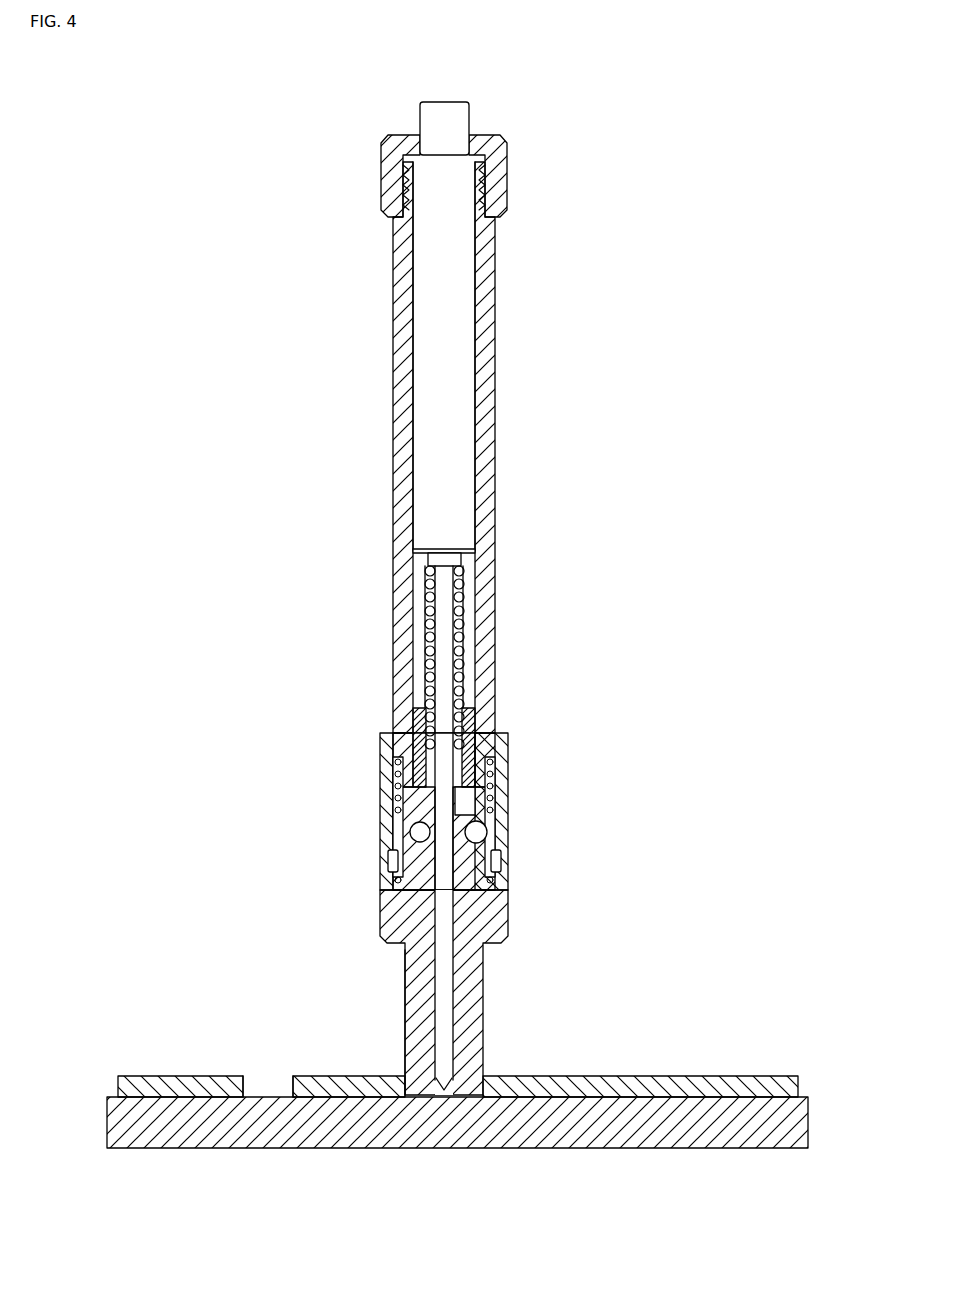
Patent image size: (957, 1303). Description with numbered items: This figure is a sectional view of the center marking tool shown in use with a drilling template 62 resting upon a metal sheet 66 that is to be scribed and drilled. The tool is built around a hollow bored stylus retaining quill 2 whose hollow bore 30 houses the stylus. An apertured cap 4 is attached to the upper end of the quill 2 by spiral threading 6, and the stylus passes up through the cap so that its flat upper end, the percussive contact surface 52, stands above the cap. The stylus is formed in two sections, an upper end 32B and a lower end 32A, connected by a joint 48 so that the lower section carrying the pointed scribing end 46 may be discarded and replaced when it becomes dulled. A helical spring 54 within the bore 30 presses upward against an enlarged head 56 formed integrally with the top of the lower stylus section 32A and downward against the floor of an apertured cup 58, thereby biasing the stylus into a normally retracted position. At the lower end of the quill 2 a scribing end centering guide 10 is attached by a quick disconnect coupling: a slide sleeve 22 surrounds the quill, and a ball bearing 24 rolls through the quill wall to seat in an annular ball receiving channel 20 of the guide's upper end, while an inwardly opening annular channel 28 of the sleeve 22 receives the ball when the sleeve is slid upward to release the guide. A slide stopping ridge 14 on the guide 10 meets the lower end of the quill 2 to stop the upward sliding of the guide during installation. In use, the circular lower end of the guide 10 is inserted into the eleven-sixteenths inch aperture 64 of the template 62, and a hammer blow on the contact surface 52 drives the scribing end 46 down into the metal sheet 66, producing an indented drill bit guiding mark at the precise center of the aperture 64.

The stylus retaining quill 2 is at (488, 295).
The apertured cap 4 is at (500, 166).
The spiral threading 6 is at (396, 181).
The scribing end centering guide 10 is at (384, 986).
The slide stopping ridge 14 is at (503, 928).
The annular ball receiving channel 20 is at (417, 832).
The slide sleeve 22 is at (508, 747).
The ball bearing 24 is at (478, 832).
The inwardly opening annular channel 28 is at (392, 862).
The hollow bore 30 is at (476, 602).
The lower end of stylus 32A is at (443, 614).
The upper end of stylus 32B is at (442, 330).
The pointed scribing end 46 is at (448, 1075).
The joint 48 is at (438, 552).
The percussive contact surface 52 is at (440, 101).
The helical spring 54 is at (463, 645).
The enlarged head 56 is at (451, 554).
The apertured cup 58 is at (417, 722).
The drilling template 62 is at (628, 1088).
The eleven-sixteenths inch aperture 64 is at (403, 1090).
The metal sheet 66 is at (268, 1088).